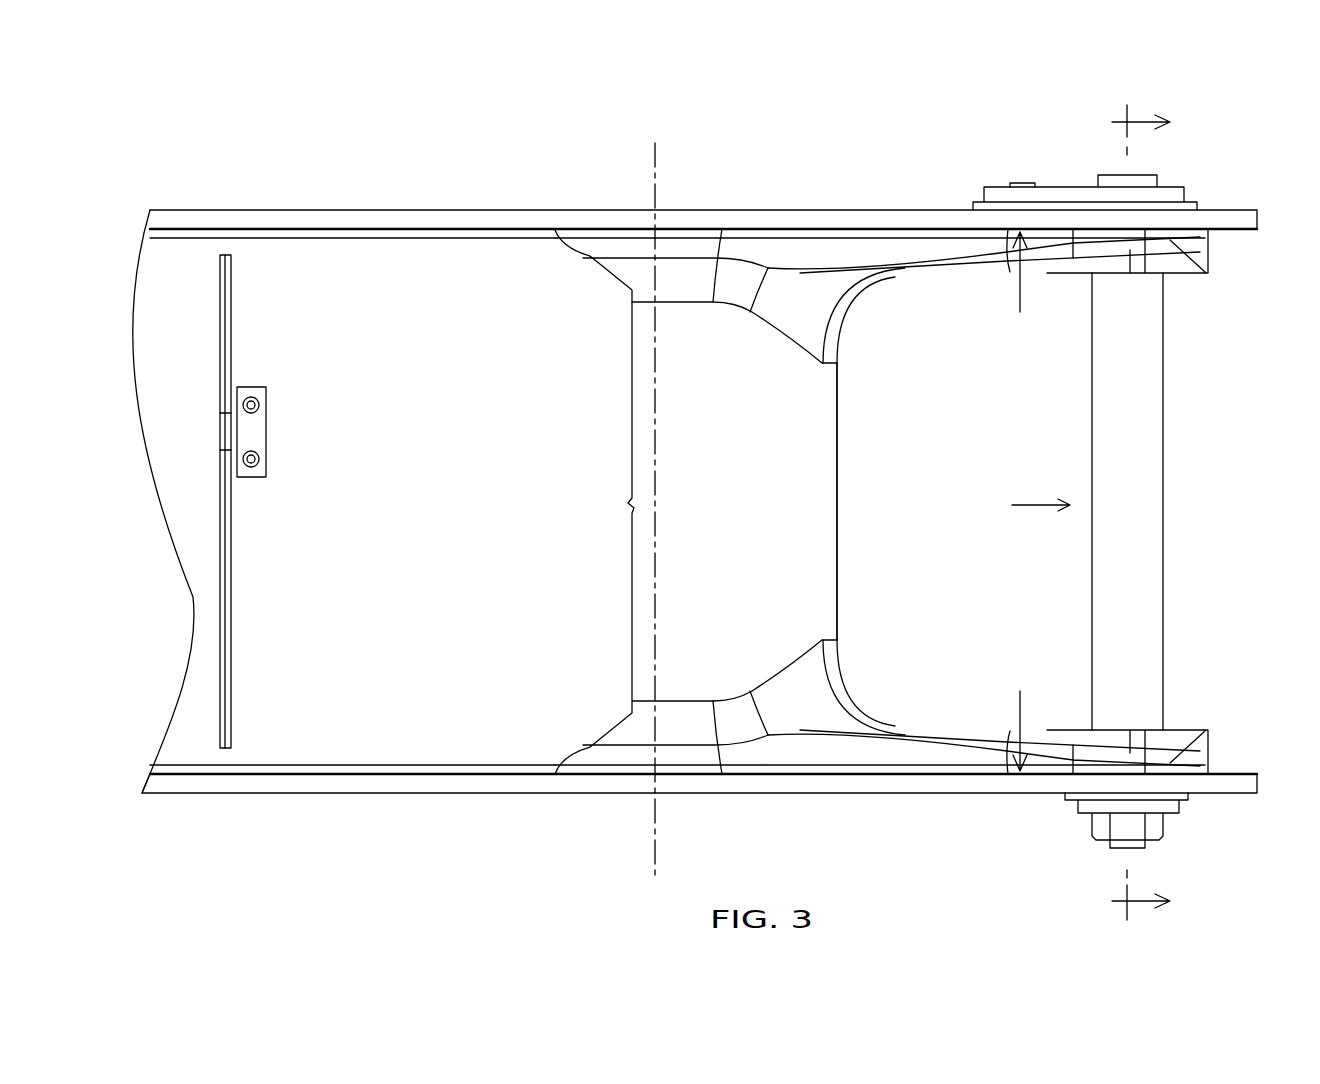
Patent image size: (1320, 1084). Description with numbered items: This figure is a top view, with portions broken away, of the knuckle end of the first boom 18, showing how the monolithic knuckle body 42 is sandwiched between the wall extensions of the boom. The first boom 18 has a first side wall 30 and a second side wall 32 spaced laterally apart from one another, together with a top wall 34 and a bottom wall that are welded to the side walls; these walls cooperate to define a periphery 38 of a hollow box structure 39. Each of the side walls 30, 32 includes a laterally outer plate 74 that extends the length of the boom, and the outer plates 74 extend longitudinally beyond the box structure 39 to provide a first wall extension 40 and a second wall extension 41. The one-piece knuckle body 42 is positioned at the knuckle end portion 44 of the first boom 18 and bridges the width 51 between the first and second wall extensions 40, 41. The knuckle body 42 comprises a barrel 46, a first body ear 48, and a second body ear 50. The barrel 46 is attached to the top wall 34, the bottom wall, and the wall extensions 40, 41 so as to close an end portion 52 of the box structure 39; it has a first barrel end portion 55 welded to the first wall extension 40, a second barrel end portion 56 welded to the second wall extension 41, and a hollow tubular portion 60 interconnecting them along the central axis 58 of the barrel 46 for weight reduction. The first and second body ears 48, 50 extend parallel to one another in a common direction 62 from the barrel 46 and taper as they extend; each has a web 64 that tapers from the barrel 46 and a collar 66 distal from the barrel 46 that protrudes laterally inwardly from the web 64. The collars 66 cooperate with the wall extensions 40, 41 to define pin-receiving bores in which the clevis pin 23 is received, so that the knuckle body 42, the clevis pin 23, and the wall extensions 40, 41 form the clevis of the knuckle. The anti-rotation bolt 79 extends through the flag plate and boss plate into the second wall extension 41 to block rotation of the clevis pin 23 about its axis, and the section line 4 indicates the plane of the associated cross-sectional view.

The section line 4- 4 is at (1141, 513).
The first boom 18 is at (642, 128).
The clevis pin 23 is at (1147, 407).
The first side wall 30 is at (577, 812).
The second side wall 32 is at (581, 128).
The top wall 34 is at (625, 637).
The periphery 38 is at (402, 752).
The box structure 39 is at (340, 752).
The first wall extension 40 is at (987, 783).
The second wall extension 41 is at (866, 215).
The knuckle body 42 is at (860, 424).
The knuckle end portion 44 is at (1223, 217).
The barrel 46 is at (822, 533).
The first body ear 48 is at (965, 738).
The second body ear 50 is at (972, 268).
The width 51 is at (1022, 296).
The end portion 52 is at (585, 240).
The first barrel end portion 55 is at (815, 765).
The second barrel end portion 56 is at (735, 238).
The central axis 58 is at (655, 447).
The tubular portion 60 is at (822, 485).
The common direction 62 is at (1037, 505).
The web 64 is at (930, 265).
The collar 66 is at (1192, 275).
The laterally outer plate 74 is at (518, 220).
The anti-rotation bolt 79 is at (1023, 183).